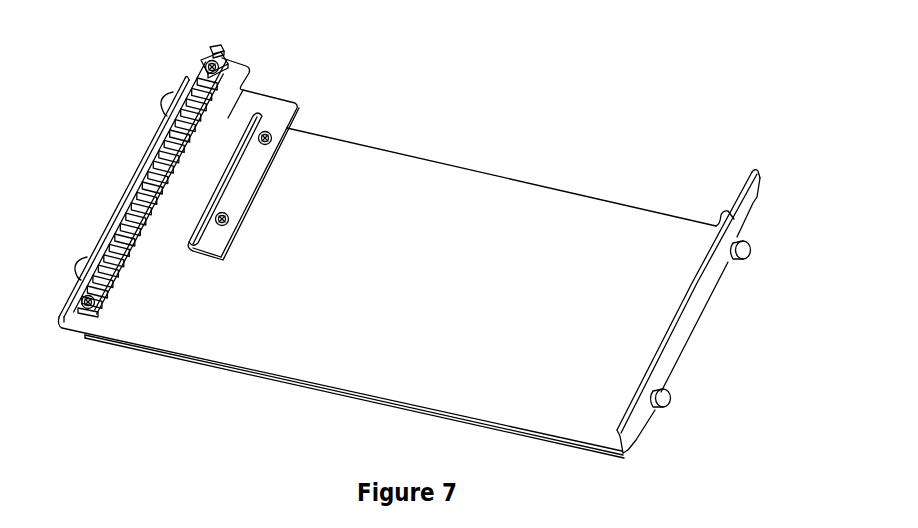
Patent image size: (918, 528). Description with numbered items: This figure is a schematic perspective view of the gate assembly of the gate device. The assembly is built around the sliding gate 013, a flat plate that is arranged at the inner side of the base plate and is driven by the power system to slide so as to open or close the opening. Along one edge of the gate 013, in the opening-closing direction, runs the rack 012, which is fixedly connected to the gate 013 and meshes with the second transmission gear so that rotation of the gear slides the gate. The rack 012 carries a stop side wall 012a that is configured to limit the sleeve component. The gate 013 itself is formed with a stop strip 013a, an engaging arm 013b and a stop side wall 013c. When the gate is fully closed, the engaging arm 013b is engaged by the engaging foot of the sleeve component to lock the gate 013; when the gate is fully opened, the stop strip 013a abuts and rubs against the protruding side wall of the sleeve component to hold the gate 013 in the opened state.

The rack 012 is at (200, 74).
The stop side wall 012a is at (207, 104).
The gate 013 is at (343, 187).
The stop strip 013a is at (190, 248).
The engaging arm 013b is at (226, 51).
The stop side wall 013c is at (240, 149).